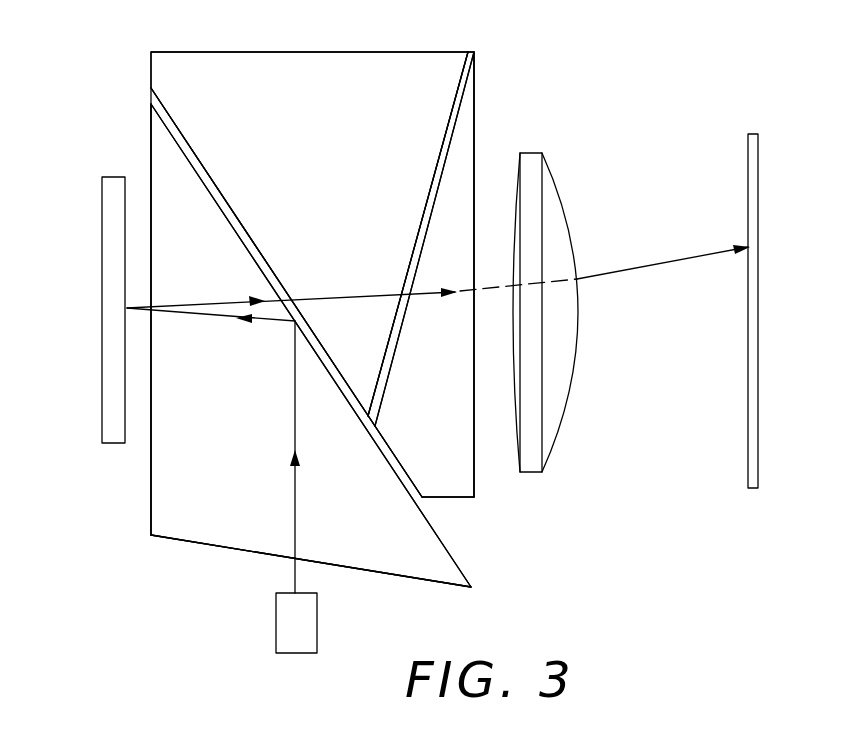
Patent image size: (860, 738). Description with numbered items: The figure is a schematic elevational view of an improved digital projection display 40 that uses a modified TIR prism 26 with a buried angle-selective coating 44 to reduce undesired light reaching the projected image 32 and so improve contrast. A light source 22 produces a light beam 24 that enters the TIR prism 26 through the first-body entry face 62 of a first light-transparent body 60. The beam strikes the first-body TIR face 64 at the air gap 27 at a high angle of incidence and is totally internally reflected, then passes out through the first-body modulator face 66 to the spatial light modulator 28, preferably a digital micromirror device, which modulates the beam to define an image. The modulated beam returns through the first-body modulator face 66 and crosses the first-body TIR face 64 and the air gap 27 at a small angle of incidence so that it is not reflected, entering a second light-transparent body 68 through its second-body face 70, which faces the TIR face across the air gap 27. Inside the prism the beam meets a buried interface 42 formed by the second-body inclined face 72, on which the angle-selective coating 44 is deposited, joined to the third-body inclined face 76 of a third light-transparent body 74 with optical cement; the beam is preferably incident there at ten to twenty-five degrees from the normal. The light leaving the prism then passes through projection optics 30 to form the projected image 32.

The improved digital projection display 40 is at (132, 38).
The second light-transparent body 68 is at (286, 70).
The second-body face 70 is at (270, 266).
The third light-transparent body 74 is at (447, 493).
The buried interface 42 is at (440, 158).
The second-body inclined face 72 is at (427, 208).
The angle-selective coating 44 is at (403, 307).
The third-body inclined face 76 is at (390, 365).
The first light-transparent body 60 is at (152, 510).
The first-body modulator face 66 is at (152, 238).
The first-body TIR face 64 is at (358, 405).
The air gap 27 is at (385, 452).
The first-body entry face 62 is at (403, 580).
The TIR prism 26 is at (182, 550).
The spatial light modulator 28 is at (102, 412).
The projection optics 30 is at (540, 472).
The projected image 32 is at (746, 246).
The light source 22 is at (317, 630).
The light beam 24 is at (217, 300).